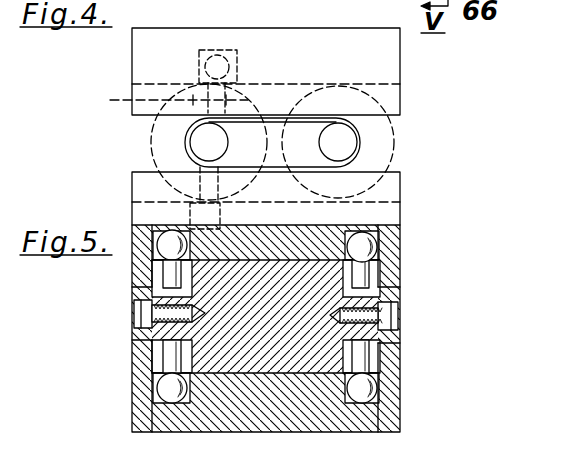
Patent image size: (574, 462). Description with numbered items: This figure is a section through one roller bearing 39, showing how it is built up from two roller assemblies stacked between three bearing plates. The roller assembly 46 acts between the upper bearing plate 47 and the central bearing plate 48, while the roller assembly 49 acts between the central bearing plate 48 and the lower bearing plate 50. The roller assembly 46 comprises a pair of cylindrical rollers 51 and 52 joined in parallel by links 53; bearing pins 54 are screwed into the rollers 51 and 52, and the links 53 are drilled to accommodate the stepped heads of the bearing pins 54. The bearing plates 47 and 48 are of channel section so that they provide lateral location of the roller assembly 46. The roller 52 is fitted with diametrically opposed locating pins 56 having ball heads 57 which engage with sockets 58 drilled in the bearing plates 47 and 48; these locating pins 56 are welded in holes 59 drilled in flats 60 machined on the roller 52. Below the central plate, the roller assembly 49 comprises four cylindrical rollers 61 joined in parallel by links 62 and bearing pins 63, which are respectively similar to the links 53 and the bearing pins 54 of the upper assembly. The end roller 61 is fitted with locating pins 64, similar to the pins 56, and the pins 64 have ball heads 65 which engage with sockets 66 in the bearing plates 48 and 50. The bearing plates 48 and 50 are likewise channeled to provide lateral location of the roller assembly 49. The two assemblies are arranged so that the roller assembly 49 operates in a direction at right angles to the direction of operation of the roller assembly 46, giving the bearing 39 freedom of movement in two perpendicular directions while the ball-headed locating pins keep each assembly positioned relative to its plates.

In FIG. 4, the roller bearing 39 is at (373, 215).
In FIG. 4, the roller assembly 46 is at (383, 153).
In FIG. 4, the upper bearing plate 47 is at (387, 58).
In FIG. 4, the central bearing plate 48 is at (446, 188).
In FIG. 5, the roller assembly 49 is at (381, 285).
In FIG. 5, the lower bearing plate 50 is at (391, 366).
In FIG. 4, the cylindrical roller 51 is at (446, 125).
In FIG. 4, the cylindrical roller 52 is at (157, 133).
In FIG. 4, the link 53 is at (240, 200).
In FIG. 4, the bearing pin 54 is at (350, 111).
In FIG. 4, the locating pin 56 is at (250, 93).
In FIG. 4, the ball head 57 is at (237, 50).
In FIG. 4, the socket 58 is at (200, 50).
In FIG. 4, the hole 59 is at (161, 99).
In FIG. 4, the flat 60 is at (183, 83).
In FIG. 5, the cylindrical roller 61 is at (251, 357).
In FIG. 5, the link 62 is at (392, 333).
In FIG. 5, the bearing pin 63 is at (133, 313).
In FIG. 5, the locating pin 64 is at (170, 357).
In FIG. 5, the ball head 65 is at (165, 385).
In FIG. 5, the socket 66 is at (375, 395).